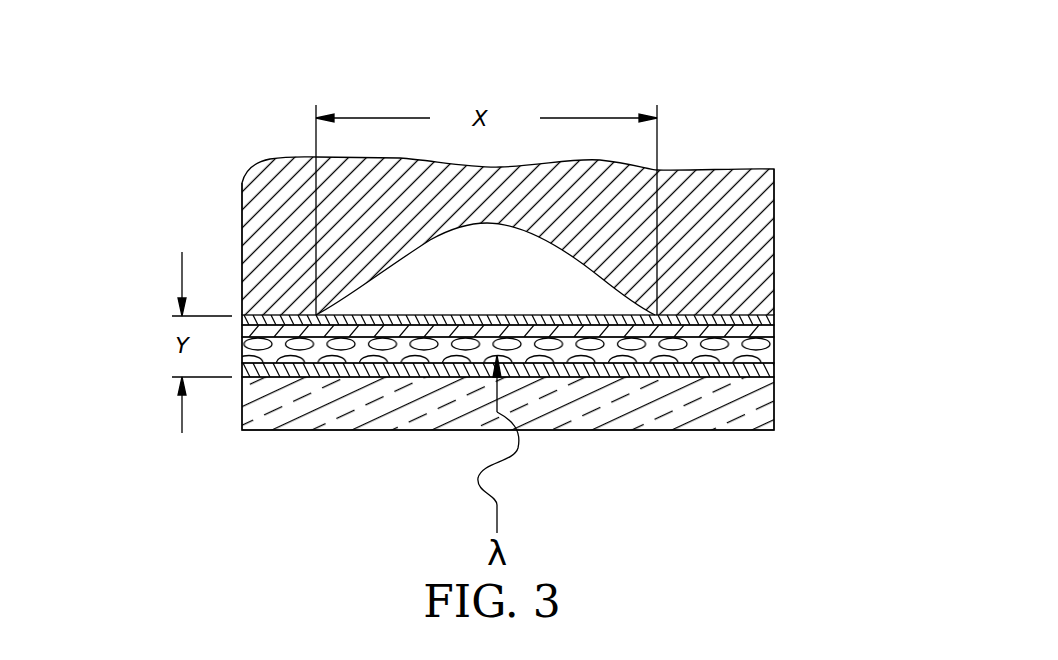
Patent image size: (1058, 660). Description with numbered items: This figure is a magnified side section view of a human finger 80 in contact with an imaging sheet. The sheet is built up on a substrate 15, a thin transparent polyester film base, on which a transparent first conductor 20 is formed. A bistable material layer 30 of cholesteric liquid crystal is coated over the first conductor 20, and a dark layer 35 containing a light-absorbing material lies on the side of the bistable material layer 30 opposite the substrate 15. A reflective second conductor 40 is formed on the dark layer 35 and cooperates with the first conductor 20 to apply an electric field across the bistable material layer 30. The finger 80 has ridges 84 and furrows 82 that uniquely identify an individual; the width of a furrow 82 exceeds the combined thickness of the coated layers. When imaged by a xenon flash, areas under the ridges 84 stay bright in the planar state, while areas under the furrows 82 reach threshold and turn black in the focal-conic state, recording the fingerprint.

The finger 80 is at (248, 118).
The ridges 84 is at (258, 230).
The furrows 82 is at (552, 273).
The second conductor 40 is at (770, 317).
The dark layer 35 is at (766, 334).
The bistable material layer 30 is at (763, 357).
The first conductor 20 is at (762, 373).
The substrate 15 is at (758, 402).